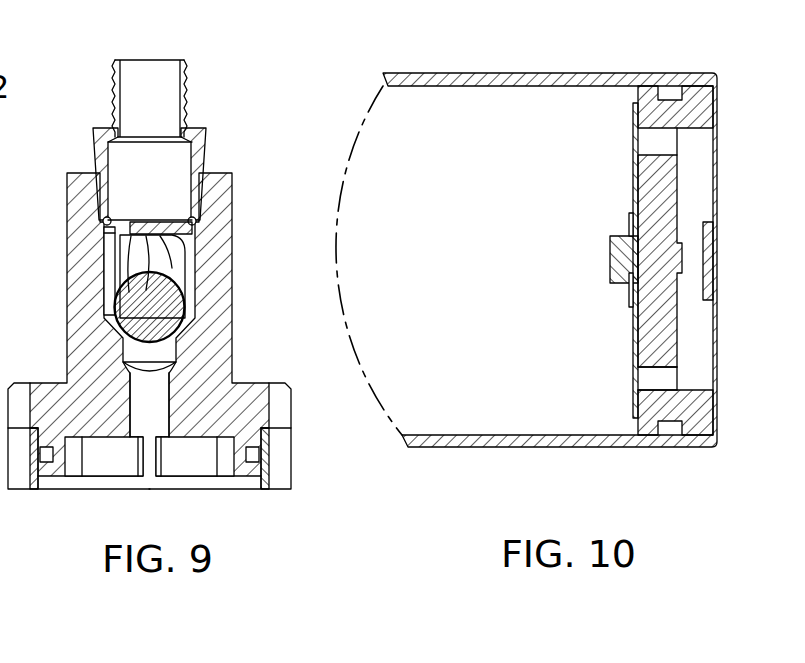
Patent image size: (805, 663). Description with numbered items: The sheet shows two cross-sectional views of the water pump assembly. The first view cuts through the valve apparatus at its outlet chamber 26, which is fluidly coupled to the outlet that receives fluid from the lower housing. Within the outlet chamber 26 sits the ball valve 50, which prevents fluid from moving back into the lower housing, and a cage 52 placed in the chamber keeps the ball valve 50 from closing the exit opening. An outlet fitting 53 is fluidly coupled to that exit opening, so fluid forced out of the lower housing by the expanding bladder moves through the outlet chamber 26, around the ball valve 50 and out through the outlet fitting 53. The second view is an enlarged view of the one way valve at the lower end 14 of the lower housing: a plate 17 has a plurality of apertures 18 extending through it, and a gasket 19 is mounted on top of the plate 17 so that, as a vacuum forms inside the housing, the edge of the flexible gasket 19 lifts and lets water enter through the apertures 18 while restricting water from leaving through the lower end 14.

In FIG. 9, the outlet fitting 53 is at (186, 98).
In FIG. 9, the cage 52 is at (128, 256).
In FIG. 9, the ball valve 50 is at (158, 297).
In FIG. 9, the outlet chamber 26 is at (148, 400).
In FIG. 10, the lower end 14 is at (705, 73).
In FIG. 10, the plate 17 is at (660, 197).
In FIG. 10, the apertures 18 is at (686, 372).
In FIG. 10, the gasket 19 is at (632, 399).